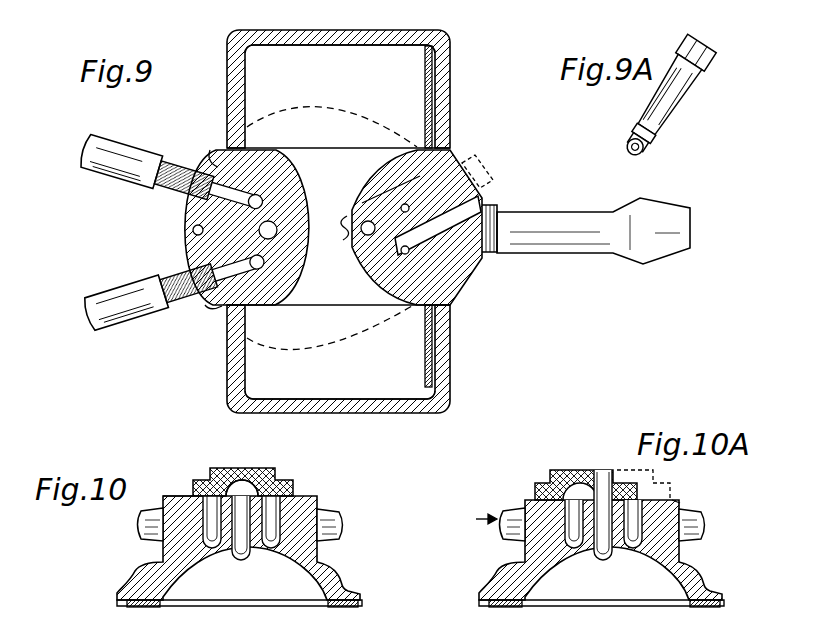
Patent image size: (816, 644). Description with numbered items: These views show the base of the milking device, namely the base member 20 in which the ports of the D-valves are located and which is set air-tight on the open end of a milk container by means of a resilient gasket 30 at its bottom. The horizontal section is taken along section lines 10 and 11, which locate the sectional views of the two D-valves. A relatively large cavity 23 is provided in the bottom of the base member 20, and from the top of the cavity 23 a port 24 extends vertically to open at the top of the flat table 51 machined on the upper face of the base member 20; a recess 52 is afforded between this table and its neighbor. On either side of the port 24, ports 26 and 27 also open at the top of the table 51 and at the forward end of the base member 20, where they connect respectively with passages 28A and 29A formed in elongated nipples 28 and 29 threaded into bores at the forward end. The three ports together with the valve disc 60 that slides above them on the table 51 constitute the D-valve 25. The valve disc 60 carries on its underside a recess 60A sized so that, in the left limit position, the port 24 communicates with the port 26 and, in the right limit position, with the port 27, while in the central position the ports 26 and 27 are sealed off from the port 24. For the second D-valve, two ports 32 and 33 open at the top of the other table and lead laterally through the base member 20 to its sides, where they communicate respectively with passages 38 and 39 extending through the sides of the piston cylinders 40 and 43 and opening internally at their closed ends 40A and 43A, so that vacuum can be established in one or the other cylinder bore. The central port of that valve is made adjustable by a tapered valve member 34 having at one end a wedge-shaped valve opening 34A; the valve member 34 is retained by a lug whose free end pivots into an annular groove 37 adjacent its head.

In FIG. 9, the section line 10— 10 is at (268, 140).
In FIG. 9, the section line 11— 11 is at (412, 70).
In FIG. 9, the base member 20 is at (470, 262).
In FIG. 10, the base member 20 is at (345, 587).
In FIG. 10A, the base member 20 is at (686, 587).
In FIG. 10, the cavity 23 is at (194, 580).
In FIG. 10A, the cavity 23 is at (548, 580).
In FIG. 9, the port 24 is at (303, 207).
In FIG. 10, the port 24 is at (238, 550).
In FIG. 10A, the port 24 is at (596, 550).
In FIG. 10, the D-valve 25 is at (306, 481).
In FIG. 10A, the D-valve 25 is at (690, 482).
In FIG. 9, the port 26 is at (213, 307).
In FIG. 10, the port 26 is at (216, 548).
In FIG. 10A, the port 26 is at (573, 552).
In FIG. 9, the port 27 is at (216, 152).
In FIG. 10, the port 27 is at (266, 545).
In FIG. 10A, the port 27 is at (633, 547).
In FIG. 9, the elongated nipple 28 is at (98, 320).
In FIG. 10, the elongated nipple 28 is at (135, 527).
In FIG. 10A, the elongated nipple 28 is at (498, 510).
In FIG. 9, the passage 28A is at (163, 276).
In FIG. 9, the elongated nipple 29 is at (88, 166).
In FIG. 10, the elongated nipple 29 is at (334, 518).
In FIG. 10A, the elongated nipple 29 is at (714, 521).
In FIG. 9, the passage 29A is at (163, 183).
In FIG. 10, the resilient gasket 30 is at (332, 604).
In FIG. 10A, the resilient gasket 30 is at (698, 606).
In FIG. 9, the port 32 is at (404, 268).
In FIG. 9, the port 33 is at (410, 177).
In FIG. 9A, the tapered valve member 34 is at (681, 103).
In FIG. 9A, the wedge-shaped valve opening 34A is at (632, 127).
In FIG. 9A, the annular groove 37 is at (695, 48).
In FIG. 9, the passage 38 is at (434, 385).
In FIG. 9, the passage 39 is at (433, 104).
In FIG. 9, the piston cylinder 40 is at (452, 366).
In FIG. 9, the closed end 40A is at (303, 401).
In FIG. 9, the piston cylinder 43 is at (227, 50).
In FIG. 9, the closed end 43A is at (292, 32).
In FIG. 10, the table 51 is at (176, 494).
In FIG. 10A, the table 51 is at (674, 502).
In FIG. 9, the recess 52 is at (331, 232).
In FIG. 10, the valve disc 60 is at (275, 468).
In FIG. 10A, the valve disc 60 is at (562, 470).
In FIG. 10, the recess 60A is at (238, 478).